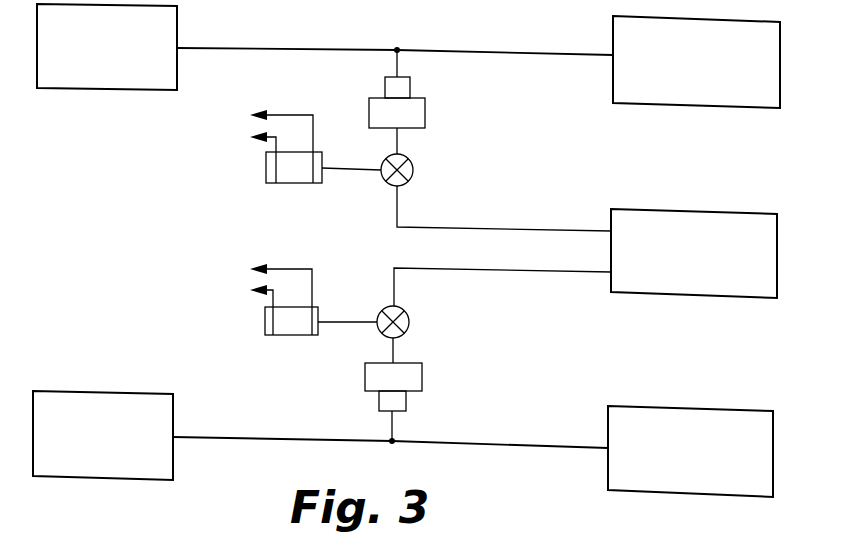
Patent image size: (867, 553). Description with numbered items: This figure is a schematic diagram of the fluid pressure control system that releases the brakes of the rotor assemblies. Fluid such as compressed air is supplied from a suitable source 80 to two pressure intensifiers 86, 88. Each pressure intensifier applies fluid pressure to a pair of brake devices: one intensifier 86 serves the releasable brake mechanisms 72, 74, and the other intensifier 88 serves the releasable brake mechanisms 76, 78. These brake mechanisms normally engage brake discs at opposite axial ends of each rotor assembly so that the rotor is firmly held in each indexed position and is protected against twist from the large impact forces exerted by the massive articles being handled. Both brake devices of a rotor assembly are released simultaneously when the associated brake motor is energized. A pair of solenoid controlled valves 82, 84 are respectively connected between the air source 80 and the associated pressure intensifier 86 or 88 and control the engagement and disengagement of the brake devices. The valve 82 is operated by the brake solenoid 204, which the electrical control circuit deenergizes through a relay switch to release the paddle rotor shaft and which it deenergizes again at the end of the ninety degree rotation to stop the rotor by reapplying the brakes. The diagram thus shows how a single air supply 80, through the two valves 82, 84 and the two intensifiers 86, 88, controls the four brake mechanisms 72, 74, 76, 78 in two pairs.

The releasable brake mechanism 72 is at (92, 57).
The releasable brake mechanism 74 is at (690, 70).
The releasable brake mechanism 76 is at (110, 441).
The releasable brake mechanism 78 is at (664, 470).
The source of compressed air 80 is at (675, 208).
The solenoid controlled valve 82 is at (414, 170).
The solenoid controlled valve 84 is at (408, 312).
The pressure intensifier 86 is at (412, 116).
The pressure intensifier 88 is at (422, 377).
The brake solenoid 204 is at (285, 162).